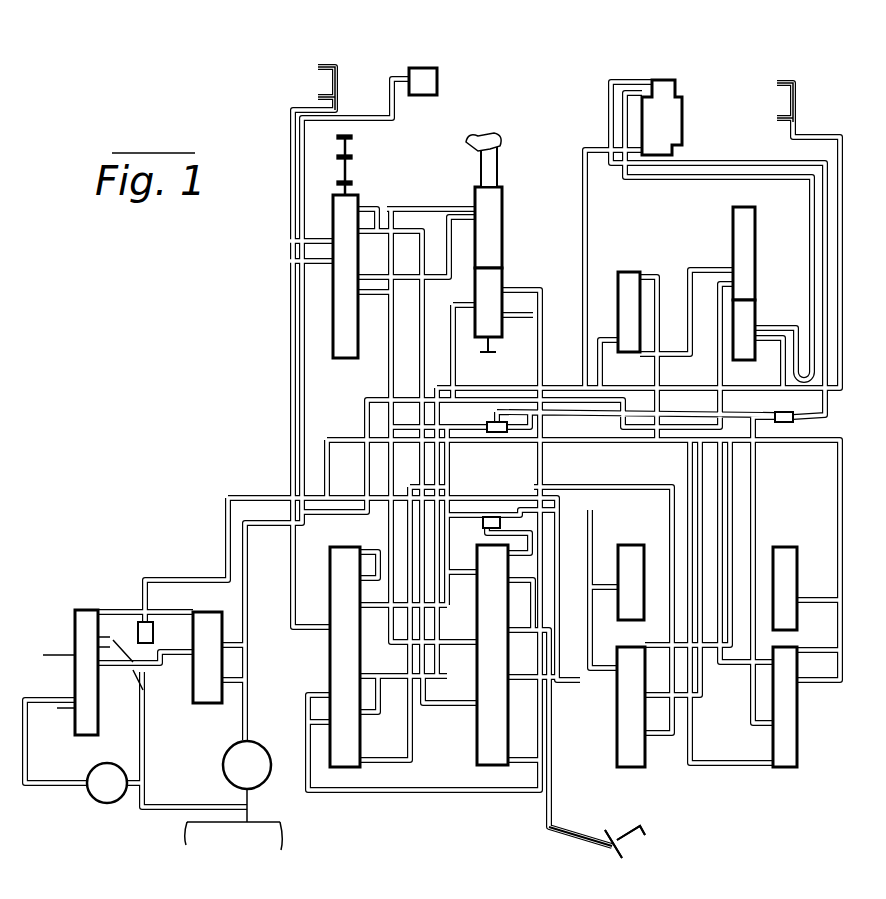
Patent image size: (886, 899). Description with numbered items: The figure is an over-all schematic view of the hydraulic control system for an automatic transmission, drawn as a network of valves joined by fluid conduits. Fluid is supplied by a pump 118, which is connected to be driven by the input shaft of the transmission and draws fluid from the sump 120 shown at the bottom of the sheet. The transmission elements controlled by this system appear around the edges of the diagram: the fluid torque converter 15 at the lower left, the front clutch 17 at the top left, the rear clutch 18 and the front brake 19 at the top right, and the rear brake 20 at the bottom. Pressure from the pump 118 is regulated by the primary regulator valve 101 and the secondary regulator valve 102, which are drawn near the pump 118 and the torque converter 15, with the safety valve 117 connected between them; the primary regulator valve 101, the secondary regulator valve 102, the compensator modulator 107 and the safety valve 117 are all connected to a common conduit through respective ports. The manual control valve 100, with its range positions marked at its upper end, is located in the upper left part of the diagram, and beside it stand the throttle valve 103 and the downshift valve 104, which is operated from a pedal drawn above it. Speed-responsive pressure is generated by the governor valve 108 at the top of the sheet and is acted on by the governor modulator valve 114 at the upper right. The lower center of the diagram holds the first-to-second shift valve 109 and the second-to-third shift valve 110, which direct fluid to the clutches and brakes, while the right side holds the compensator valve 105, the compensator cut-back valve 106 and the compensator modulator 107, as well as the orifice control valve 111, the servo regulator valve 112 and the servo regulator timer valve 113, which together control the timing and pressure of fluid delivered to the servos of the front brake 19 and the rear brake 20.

The fluid torque converter 15 is at (106, 803).
The front clutch 17 is at (330, 58).
The rear clutch 18 is at (788, 78).
The front brake 19 is at (662, 78).
The rear brake 20 is at (650, 847).
The manual control valve 100 is at (331, 315).
The primary regulator valve 101 is at (208, 705).
The secondary regulator valve 102 is at (86, 608).
The throttle valve 103 is at (506, 279).
The downshift valve 104 is at (506, 200).
The compensator valve 105 is at (785, 770).
The compensator cut-back valve 106 is at (637, 545).
The compensator modulator 107 is at (786, 545).
The governor valve 108 is at (426, 63).
The 1-2 shift valve 109 is at (477, 731).
The 2-3 shift valve 110 is at (328, 668).
The orifice control valve 111 is at (758, 302).
The servo regulator valve 112 is at (627, 770).
The servo regulator timer valve 113 is at (626, 270).
The governor modulator valve 114 is at (730, 222).
The safety valve 117 is at (154, 632).
The pump 118 is at (226, 781).
The sump 120 is at (282, 838).